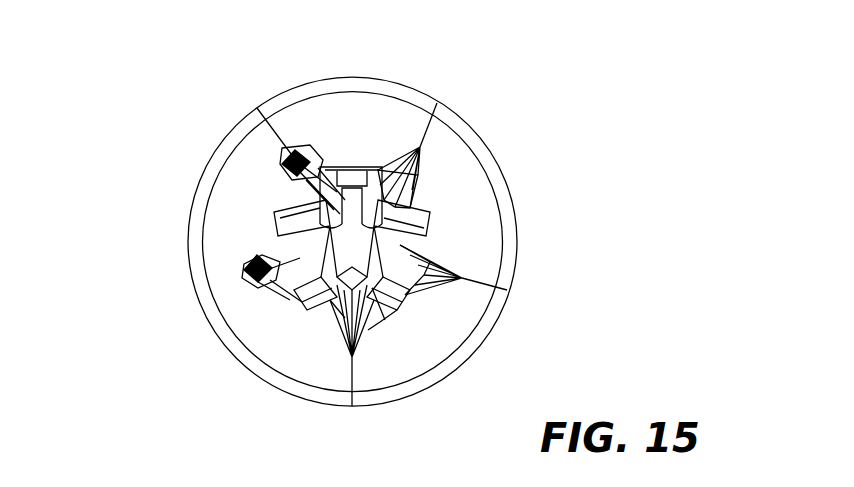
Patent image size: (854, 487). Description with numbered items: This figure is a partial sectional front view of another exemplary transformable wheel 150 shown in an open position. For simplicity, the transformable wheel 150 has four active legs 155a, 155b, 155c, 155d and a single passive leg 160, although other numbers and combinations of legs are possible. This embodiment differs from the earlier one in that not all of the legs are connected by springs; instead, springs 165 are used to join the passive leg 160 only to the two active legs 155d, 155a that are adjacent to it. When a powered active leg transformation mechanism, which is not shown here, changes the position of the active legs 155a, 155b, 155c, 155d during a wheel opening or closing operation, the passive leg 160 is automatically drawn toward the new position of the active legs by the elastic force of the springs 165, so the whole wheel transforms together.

The transformable wheel 150 is at (127, 118).
The active leg 155a is at (410, 116).
The active leg 155b is at (457, 200).
The active leg 155c is at (413, 338).
The active leg 155d is at (263, 325).
The passive leg 160 is at (236, 214).
The springs 165 is at (245, 272).